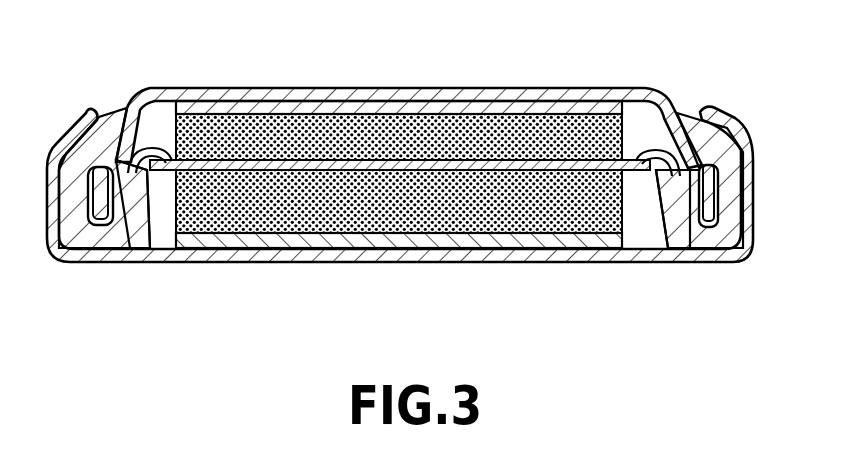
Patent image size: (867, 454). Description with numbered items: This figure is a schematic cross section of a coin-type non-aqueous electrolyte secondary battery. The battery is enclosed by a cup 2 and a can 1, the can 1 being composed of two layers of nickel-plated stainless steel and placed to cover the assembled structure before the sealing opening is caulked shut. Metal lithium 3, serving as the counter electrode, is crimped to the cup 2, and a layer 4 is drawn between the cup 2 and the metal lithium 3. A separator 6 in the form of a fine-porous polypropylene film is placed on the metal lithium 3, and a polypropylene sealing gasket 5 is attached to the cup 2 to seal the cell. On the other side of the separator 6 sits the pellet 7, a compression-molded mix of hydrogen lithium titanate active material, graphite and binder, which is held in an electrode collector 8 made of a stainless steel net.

The can 1 is at (163, 254).
The cup 2 is at (243, 100).
The metal lithium 3 is at (354, 135).
The current collector layer 4 is at (433, 110).
The sealing gasket 5 is at (693, 122).
The separator 6 is at (520, 165).
The pellet 7 is at (323, 207).
The electrode collector 8 is at (523, 240).